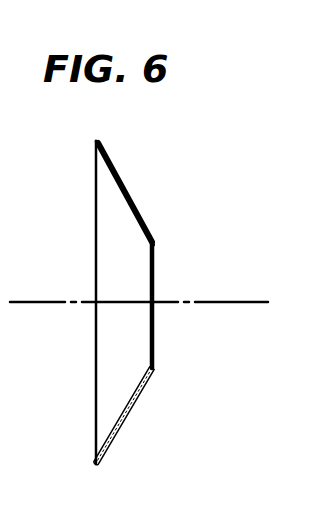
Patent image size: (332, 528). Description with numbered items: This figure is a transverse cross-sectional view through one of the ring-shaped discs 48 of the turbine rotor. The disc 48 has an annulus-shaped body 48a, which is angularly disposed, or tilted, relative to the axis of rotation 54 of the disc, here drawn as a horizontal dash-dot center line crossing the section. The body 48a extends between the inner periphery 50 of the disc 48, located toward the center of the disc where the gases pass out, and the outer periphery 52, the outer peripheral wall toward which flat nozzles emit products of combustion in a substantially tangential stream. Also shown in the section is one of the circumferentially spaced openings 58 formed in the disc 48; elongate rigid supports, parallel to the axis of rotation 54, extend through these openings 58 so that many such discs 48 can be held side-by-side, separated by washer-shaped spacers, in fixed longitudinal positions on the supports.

The disc 48 is at (157, 303).
The annulus-shaped body 48a is at (124, 189).
The inner periphery 50 is at (153, 242).
The outer periphery 52 is at (98, 143).
The axis of rotation 54 is at (157, 302).
The opening 58 is at (134, 201).